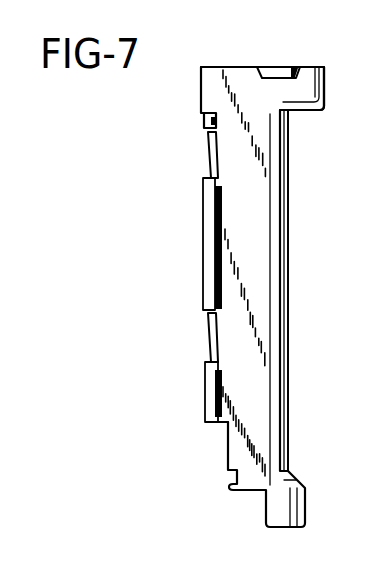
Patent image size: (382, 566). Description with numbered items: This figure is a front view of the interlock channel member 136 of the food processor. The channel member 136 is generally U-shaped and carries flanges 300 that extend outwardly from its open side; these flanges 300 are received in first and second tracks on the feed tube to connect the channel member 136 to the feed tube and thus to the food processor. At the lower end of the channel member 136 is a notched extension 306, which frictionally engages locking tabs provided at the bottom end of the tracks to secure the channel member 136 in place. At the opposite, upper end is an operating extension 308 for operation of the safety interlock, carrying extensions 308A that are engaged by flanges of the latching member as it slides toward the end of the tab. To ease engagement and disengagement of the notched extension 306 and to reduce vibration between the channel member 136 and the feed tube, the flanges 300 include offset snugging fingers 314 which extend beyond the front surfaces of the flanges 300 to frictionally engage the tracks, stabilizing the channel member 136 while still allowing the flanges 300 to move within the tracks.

The channel member 136 is at (297, 243).
The flanges 300 is at (208, 216).
The notched extension 306 is at (209, 430).
The operating extension 308 is at (325, 84).
The extensions 308A is at (274, 72).
The snugging fingers 314 is at (208, 141).